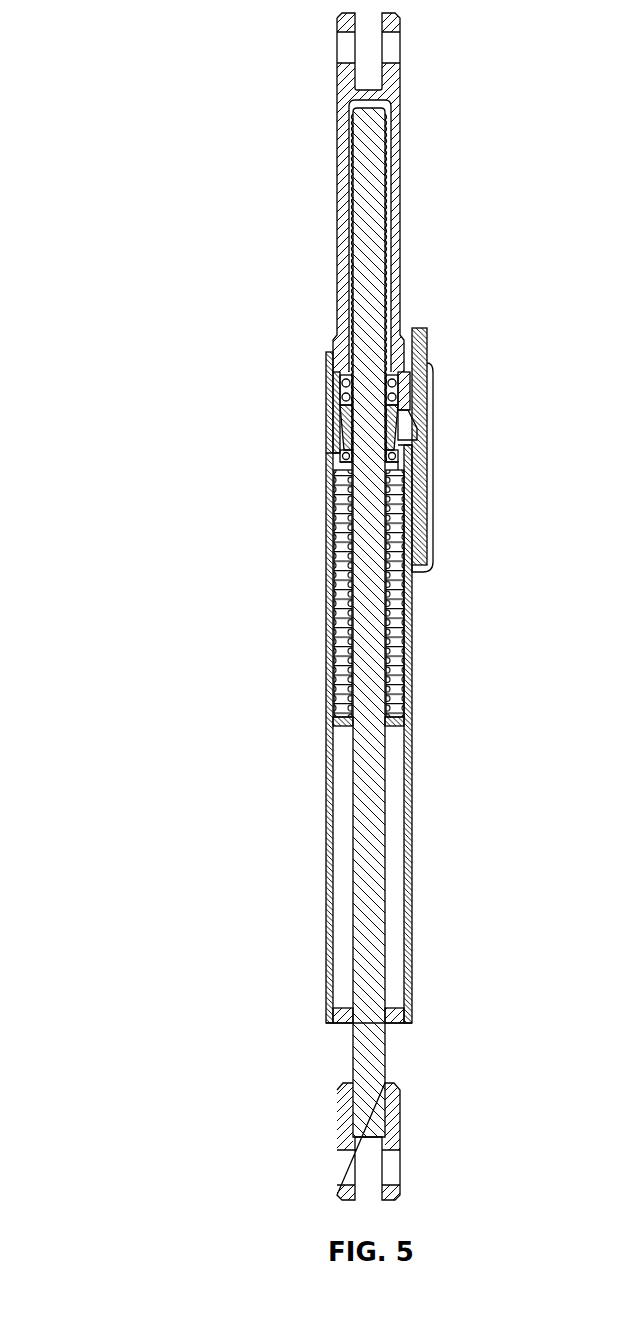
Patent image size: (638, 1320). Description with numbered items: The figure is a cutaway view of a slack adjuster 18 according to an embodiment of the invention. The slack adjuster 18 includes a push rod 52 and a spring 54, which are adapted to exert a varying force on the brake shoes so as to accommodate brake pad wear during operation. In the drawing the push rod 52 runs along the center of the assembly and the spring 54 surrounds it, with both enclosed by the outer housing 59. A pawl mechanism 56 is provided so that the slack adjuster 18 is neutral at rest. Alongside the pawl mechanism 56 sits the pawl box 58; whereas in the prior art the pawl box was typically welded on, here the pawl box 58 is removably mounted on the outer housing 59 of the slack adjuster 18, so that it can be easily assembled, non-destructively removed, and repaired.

The slack adjuster 18 is at (125, 52).
The push rod 52 is at (368, 836).
The spring 54 is at (405, 588).
The pawl mechanism 56 is at (333, 432).
The pawl box 58 is at (435, 385).
The outer tube 59 is at (408, 775).